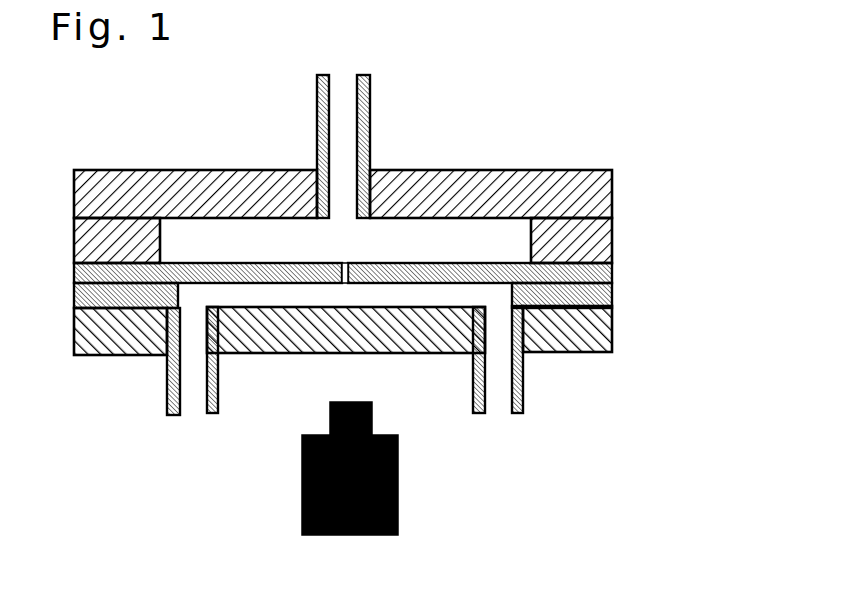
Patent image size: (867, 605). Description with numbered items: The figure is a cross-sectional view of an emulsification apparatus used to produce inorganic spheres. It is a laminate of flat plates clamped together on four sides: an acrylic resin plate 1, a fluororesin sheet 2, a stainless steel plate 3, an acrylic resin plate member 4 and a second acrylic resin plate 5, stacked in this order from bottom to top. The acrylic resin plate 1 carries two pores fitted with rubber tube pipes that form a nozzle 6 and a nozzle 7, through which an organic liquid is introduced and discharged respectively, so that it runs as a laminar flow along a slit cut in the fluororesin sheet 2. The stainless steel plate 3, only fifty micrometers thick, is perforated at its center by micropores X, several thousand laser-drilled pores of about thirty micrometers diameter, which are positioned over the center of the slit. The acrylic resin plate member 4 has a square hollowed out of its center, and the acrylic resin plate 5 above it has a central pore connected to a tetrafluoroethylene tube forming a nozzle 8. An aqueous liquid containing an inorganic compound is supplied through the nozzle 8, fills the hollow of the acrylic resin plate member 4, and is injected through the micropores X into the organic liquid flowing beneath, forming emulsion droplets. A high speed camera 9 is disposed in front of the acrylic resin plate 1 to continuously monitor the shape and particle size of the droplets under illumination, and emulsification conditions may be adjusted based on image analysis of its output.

The acrylic resin plate 1 is at (600, 342).
The fluororesin sheet 2 is at (600, 295).
The stainless steel plate 3 is at (600, 273).
The acrylic resin plate member 4 is at (612, 230).
The acrylic resin plate 5 is at (612, 182).
The nozzle 6 is at (218, 372).
The nozzle 7 is at (523, 368).
The nozzle 8 is at (370, 140).
The high speed camera 9 is at (398, 475).
The micropores X is at (343, 262).